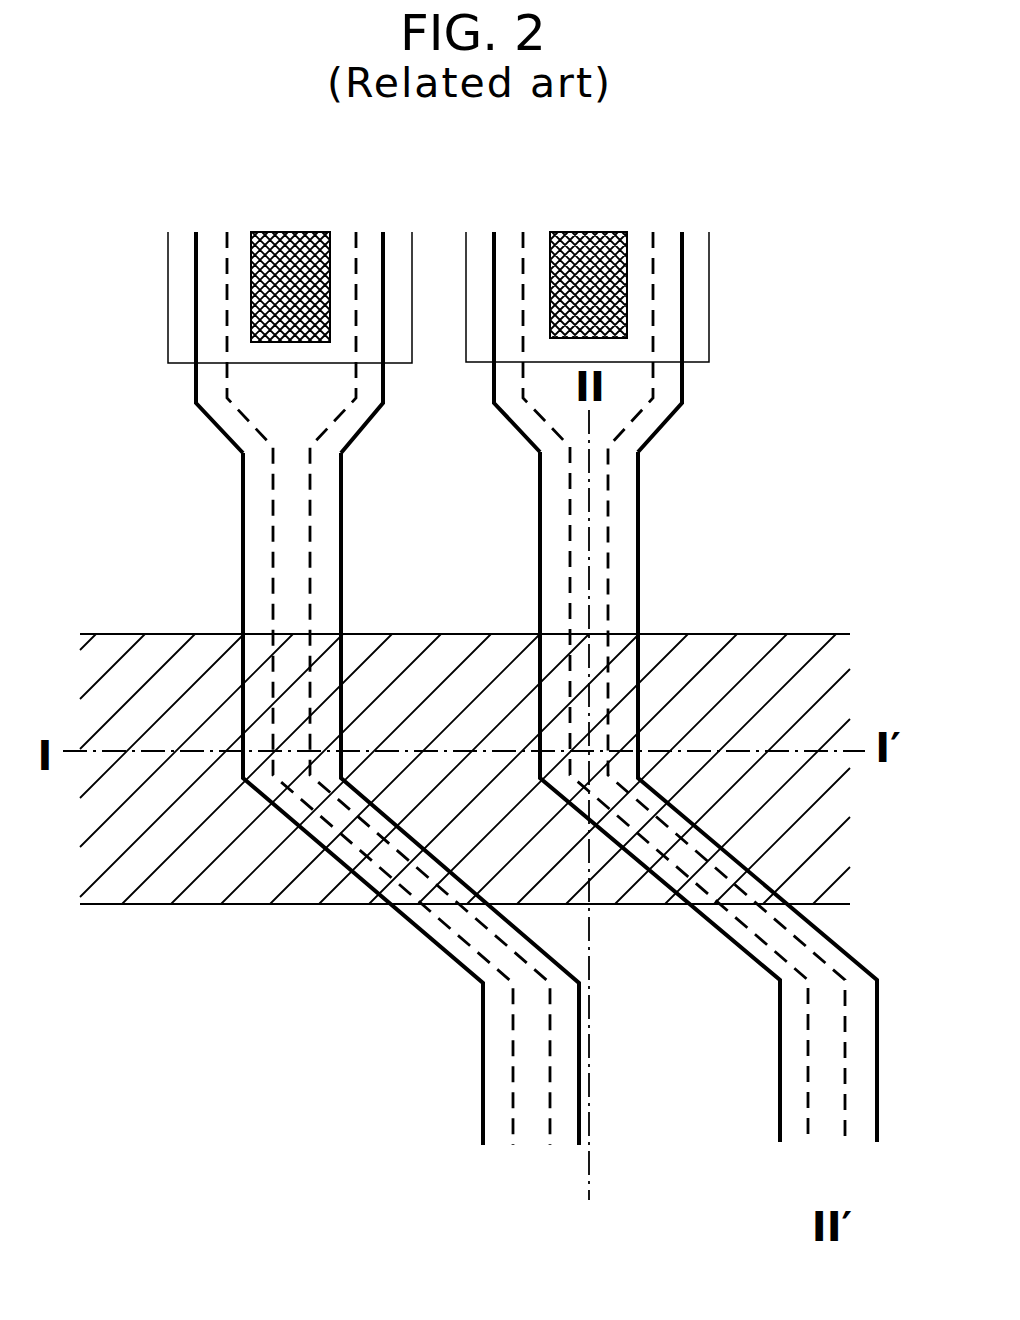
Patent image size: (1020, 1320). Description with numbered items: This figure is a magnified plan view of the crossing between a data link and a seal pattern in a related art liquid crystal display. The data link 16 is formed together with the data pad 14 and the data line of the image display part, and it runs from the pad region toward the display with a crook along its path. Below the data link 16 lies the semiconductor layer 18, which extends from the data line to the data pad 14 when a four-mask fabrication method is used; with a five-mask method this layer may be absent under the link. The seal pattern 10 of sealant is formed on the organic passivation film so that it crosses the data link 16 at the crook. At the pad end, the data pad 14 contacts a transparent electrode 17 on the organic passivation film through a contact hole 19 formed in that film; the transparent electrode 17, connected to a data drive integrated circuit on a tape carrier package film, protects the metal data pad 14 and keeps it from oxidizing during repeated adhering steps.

The seal pattern 10 is at (167, 723).
The data pad 14 is at (210, 290).
The data link 16 is at (257, 510).
The transparent electrode 17 is at (180, 337).
The semiconductor layer 18 is at (292, 578).
The contact hole 19 is at (253, 239).